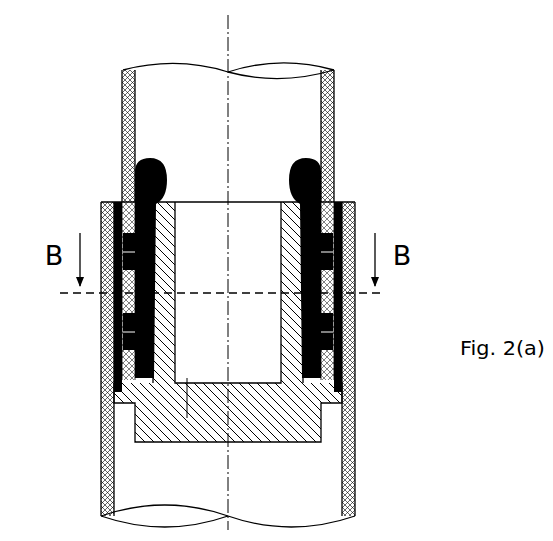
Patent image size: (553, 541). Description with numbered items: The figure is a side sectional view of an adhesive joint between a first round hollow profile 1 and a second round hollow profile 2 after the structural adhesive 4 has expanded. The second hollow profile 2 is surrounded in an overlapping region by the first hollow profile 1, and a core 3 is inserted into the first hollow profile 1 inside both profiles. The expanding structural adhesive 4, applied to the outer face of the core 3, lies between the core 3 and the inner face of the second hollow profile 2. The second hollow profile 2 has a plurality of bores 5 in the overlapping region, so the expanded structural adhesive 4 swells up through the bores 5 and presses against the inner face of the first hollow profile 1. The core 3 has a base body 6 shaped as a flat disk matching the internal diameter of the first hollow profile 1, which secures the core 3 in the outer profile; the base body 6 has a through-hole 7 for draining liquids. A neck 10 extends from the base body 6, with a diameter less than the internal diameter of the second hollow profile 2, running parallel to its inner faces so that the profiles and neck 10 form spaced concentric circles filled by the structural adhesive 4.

The first hollow profile 1 is at (348, 457).
The second hollow profile 2 is at (334, 101).
The core 3 is at (328, 392).
The structural adhesive 4 is at (322, 172).
The bores 5 is at (113, 336).
The base body 6 is at (143, 390).
The through-hole 7 is at (187, 393).
The neck 10 is at (286, 329).